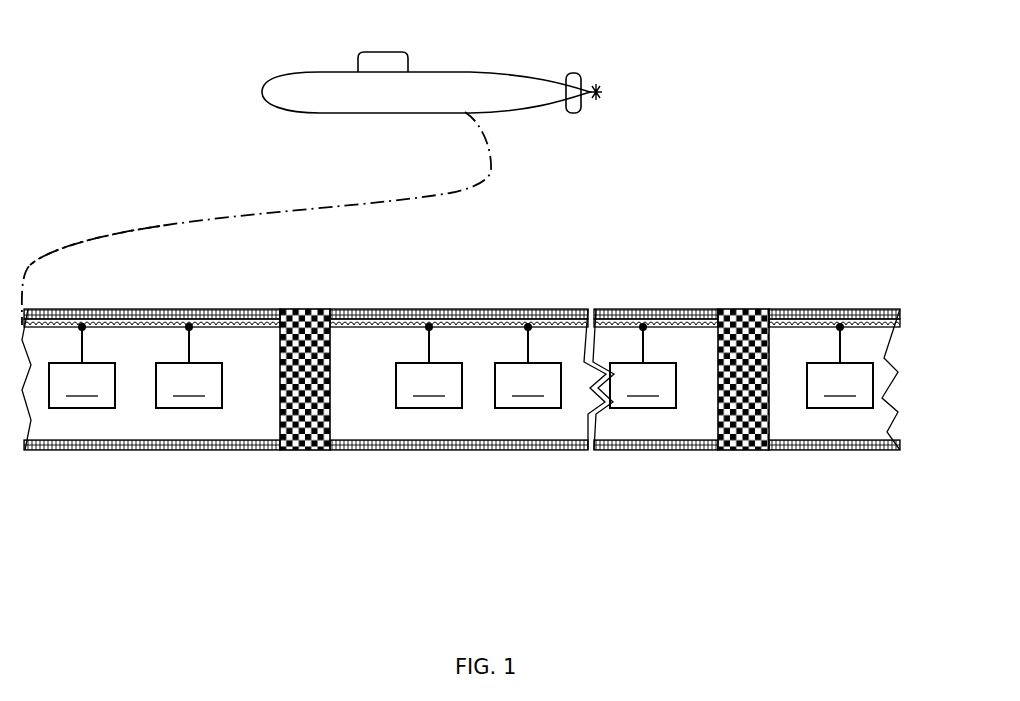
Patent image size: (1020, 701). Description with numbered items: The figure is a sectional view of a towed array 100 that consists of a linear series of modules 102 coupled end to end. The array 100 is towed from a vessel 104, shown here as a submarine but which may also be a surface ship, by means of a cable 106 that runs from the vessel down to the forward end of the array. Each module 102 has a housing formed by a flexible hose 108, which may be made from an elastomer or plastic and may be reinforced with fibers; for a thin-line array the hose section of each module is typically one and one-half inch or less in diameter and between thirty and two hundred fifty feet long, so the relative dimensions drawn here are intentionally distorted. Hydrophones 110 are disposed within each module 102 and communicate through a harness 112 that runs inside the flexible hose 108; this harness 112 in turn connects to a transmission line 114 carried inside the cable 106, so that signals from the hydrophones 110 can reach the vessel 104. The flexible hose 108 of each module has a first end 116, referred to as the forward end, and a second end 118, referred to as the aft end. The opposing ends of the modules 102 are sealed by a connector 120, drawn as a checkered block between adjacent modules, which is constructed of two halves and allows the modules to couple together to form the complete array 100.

The towed array 100 is at (733, 180).
The module 102 is at (483, 379).
The vessel 104 is at (465, 72).
The cable 106 is at (483, 183).
The flexible hose 108 is at (556, 308).
The hydrophone 110 is at (461, 366).
The harness 112 is at (898, 322).
The transmission line 114 is at (140, 228).
The first end 116 is at (305, 300).
The second end 118 is at (734, 300).
The connector 120 is at (303, 452).